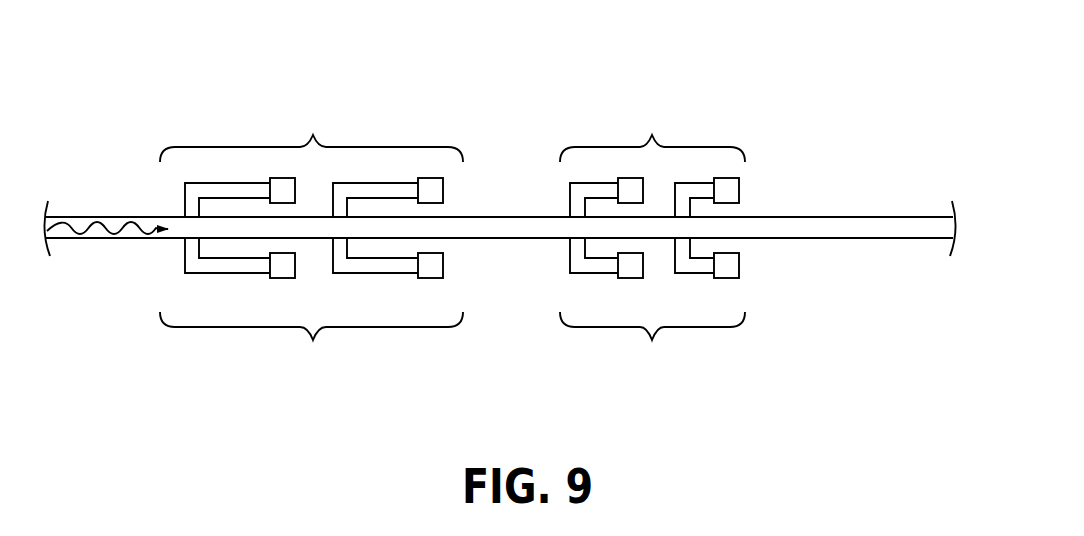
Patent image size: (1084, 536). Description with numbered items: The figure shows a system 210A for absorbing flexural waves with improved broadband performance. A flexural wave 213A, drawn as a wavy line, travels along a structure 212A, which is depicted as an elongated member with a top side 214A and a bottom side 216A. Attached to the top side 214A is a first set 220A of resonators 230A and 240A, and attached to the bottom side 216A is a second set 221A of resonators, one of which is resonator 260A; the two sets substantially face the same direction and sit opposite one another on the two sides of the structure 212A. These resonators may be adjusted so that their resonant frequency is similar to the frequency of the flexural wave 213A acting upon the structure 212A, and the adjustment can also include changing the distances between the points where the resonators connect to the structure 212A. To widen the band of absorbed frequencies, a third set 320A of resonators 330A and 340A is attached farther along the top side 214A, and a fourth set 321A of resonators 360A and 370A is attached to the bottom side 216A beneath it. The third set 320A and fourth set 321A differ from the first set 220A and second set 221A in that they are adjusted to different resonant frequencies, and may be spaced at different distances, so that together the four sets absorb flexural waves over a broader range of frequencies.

The system 210A is at (503, 154).
The structure 212A is at (855, 225).
The flexural wave 213A is at (97, 222).
The top side 214A is at (788, 217).
The bottom side 216A is at (810, 238).
The first set 220A is at (320, 243).
The second set 221A is at (269, 302).
The resonator 230A is at (165, 182).
The resonator 240A is at (453, 180).
The resonator 260A is at (157, 275).
The third set 320A is at (657, 144).
The fourth set 321A is at (713, 318).
The resonator 330A is at (553, 183).
The resonator 340A is at (758, 185).
The resonator 360A is at (550, 280).
The resonator 370A is at (757, 293).